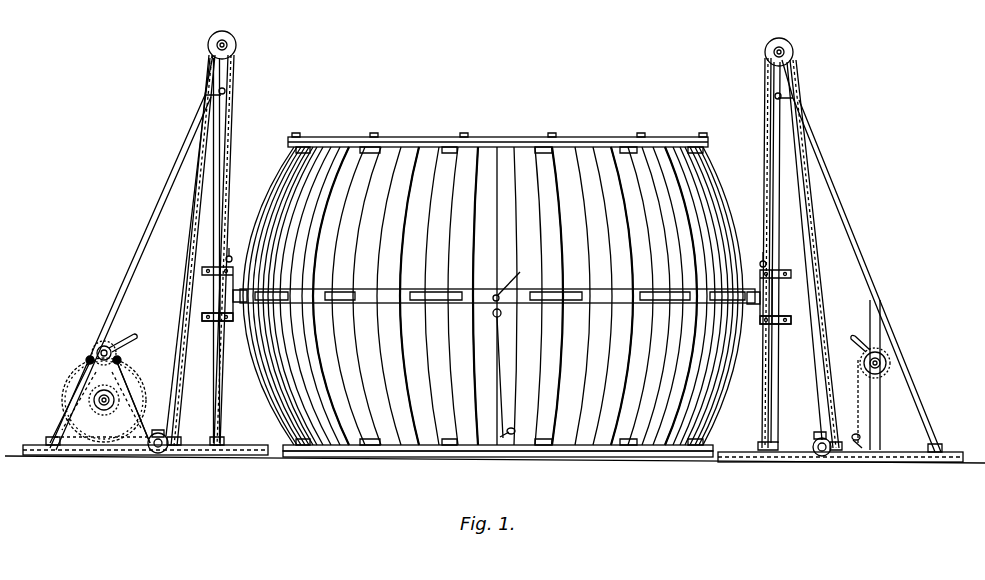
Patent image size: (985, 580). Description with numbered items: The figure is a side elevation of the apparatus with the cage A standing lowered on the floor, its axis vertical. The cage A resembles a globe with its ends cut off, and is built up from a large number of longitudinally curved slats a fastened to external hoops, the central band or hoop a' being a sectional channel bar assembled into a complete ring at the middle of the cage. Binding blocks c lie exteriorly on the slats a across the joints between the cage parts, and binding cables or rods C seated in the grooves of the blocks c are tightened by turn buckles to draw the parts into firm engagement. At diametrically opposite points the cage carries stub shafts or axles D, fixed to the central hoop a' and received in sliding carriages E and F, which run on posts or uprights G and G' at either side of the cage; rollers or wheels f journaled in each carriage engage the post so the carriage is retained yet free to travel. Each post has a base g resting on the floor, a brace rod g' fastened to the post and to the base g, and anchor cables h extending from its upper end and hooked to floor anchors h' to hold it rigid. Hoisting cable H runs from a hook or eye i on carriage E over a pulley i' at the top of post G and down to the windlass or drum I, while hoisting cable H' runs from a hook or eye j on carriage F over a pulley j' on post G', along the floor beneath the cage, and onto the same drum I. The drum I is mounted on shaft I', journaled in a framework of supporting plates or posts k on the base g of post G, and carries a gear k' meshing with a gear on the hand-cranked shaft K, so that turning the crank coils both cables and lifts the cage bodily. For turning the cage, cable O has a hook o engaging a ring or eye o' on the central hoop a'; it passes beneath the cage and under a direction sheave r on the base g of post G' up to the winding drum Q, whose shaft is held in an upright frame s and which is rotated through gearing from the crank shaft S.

The cage A is at (493, 147).
The slats a is at (498, 468).
The central band or hoop a' is at (497, 290).
The binding cables or rods C is at (572, 147).
The binding blocks c is at (372, 153).
The stub shafts or axles D is at (240, 293).
The sliding carriage E is at (242, 322).
The sliding carriage F is at (760, 325).
The rollers or wheels f is at (207, 322).
The post or upright G is at (232, 250).
The post or upright G' is at (761, 252).
The base g is at (493, 470).
The brace rod g' is at (495, 270).
The hoisting cable H is at (181, 250).
The hoisting cable H' is at (597, 283).
The anchor cables h is at (531, 249).
The floor anchor h' is at (494, 464).
The windlass or drum I is at (98, 402).
The shaft I' is at (135, 393).
The hook or eye i is at (195, 252).
The pulley i' is at (239, 45).
The hook or eye j is at (752, 221).
The pulley j' is at (799, 49).
The shaft K is at (100, 348).
The supporting plates or posts k is at (120, 391).
The gear k' is at (84, 400).
The cable O is at (500, 362).
The hook o is at (481, 323).
The ring or eye o' is at (513, 279).
The winding drum Q is at (882, 363).
The crank shaft S is at (868, 352).
The upright frame s is at (880, 410).
The direction sheave r is at (860, 452).